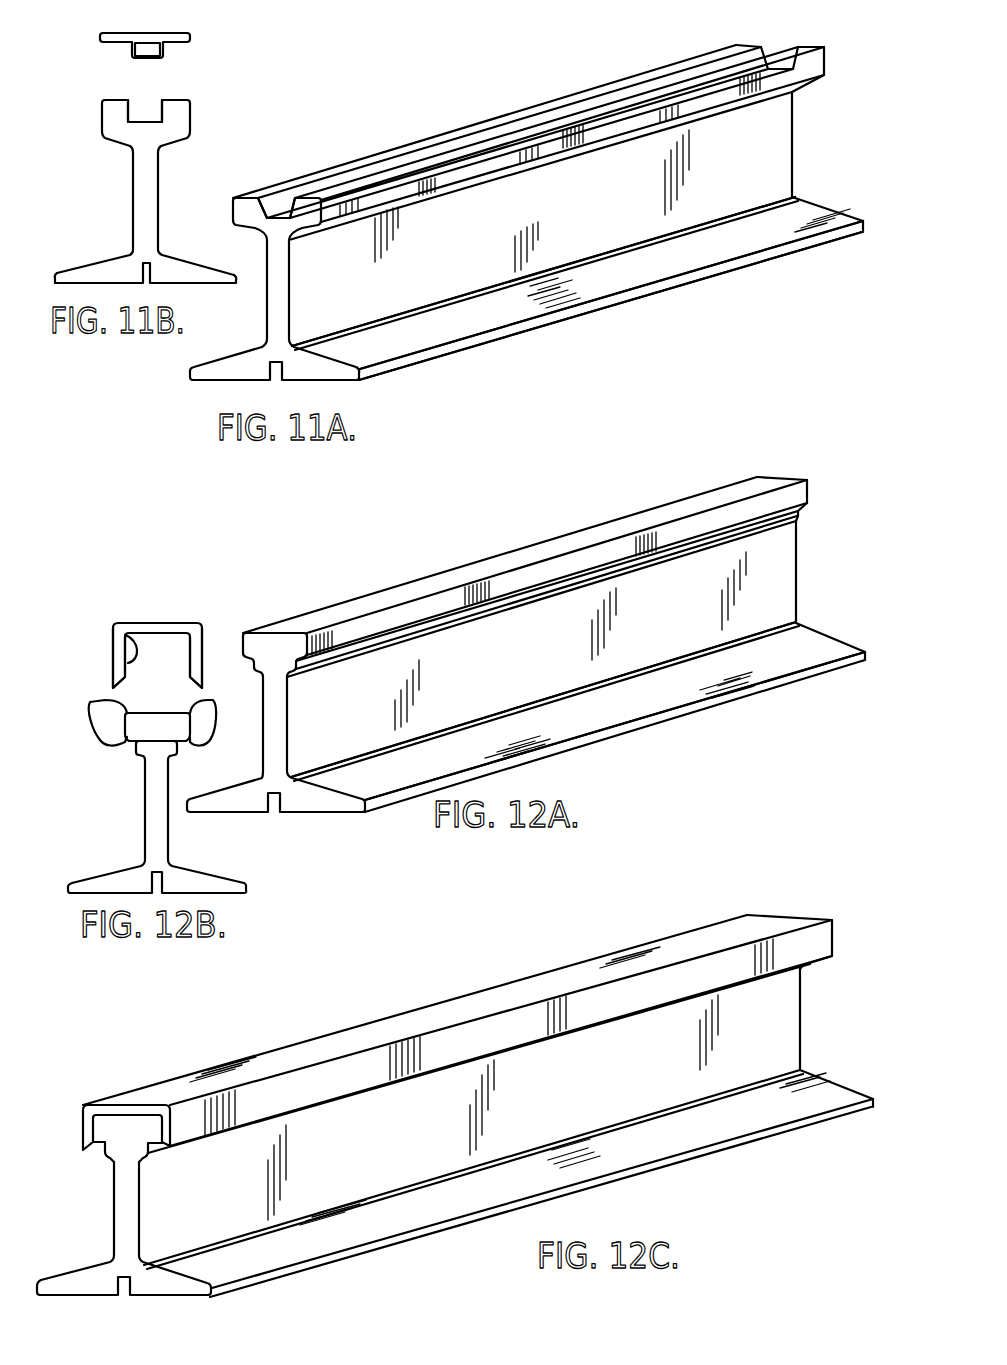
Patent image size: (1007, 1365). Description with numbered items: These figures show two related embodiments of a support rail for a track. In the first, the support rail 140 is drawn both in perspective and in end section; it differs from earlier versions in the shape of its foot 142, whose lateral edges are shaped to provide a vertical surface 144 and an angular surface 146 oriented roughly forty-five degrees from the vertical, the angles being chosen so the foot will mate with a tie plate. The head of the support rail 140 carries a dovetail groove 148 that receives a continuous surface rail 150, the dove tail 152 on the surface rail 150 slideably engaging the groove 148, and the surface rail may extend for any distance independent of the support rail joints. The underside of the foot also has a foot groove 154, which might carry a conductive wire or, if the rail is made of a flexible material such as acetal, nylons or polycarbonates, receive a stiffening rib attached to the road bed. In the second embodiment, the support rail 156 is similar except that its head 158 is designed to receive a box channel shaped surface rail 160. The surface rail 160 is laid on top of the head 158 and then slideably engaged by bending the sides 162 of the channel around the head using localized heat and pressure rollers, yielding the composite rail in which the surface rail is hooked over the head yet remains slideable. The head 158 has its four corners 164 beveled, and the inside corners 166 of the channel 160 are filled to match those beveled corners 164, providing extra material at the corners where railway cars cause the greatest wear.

In FIG. 11A, the support rail 140 is at (733, 183).
In FIG. 11A, the foot 142 is at (634, 260).
In FIG. 11A, the vertical surface 144 is at (470, 338).
In FIG. 11A, the angular surface 146 is at (372, 376).
In FIG. 11B, the dovetail groove 148 is at (153, 113).
In FIG. 11A, the dovetail groove 148 is at (277, 202).
In FIG. 11B, the surface rail 150 is at (168, 33).
In FIG. 11B, the dove tail 152 is at (147, 44).
In FIG. 11B, the foot groove 154 is at (140, 272).
In FIG. 12A, the support rail 156 is at (550, 672).
In FIG. 12C, the support rail 156 is at (660, 1087).
In FIG. 12B, the head 158 is at (160, 727).
In FIG. 12A, the head 158 is at (473, 570).
In FIG. 12B, the surface rail 160 is at (163, 632).
In FIG. 12C, the surface rail 160 is at (395, 1028).
In FIG. 12B, the sides 162 is at (197, 655).
In FIG. 12B, the beveled corners 164 is at (112, 700).
In FIG. 12B, the inside corners 166 is at (187, 635).